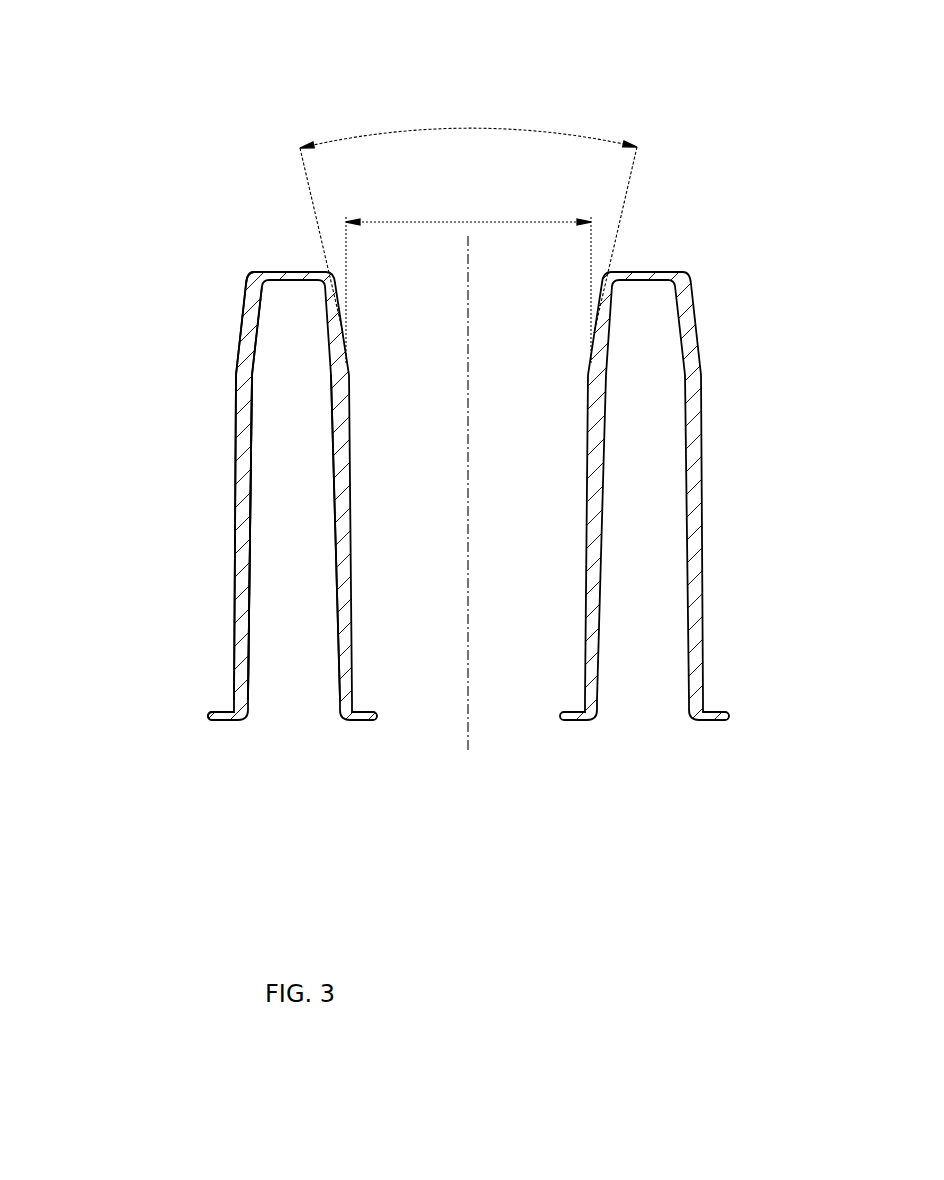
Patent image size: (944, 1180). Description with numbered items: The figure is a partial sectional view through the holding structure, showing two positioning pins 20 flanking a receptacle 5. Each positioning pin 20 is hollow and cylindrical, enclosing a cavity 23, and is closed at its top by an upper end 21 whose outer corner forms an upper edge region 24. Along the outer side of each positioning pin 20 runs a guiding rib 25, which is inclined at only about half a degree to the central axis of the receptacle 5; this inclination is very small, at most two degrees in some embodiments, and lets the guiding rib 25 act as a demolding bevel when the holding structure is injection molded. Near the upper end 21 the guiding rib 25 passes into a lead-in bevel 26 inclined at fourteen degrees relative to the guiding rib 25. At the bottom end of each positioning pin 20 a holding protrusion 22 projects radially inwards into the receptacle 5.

The receptacle 5 is at (521, 294).
The positioning pin 20 is at (240, 553).
The upper end of positioning pin 21 is at (275, 270).
The upper edge region 24 is at (248, 280).
The lead-in bevel of guiding rib 26 is at (242, 324).
The guiding rib 25 is at (240, 482).
The holding protrusion 22 is at (220, 722).
The cavity 23 is at (293, 695).